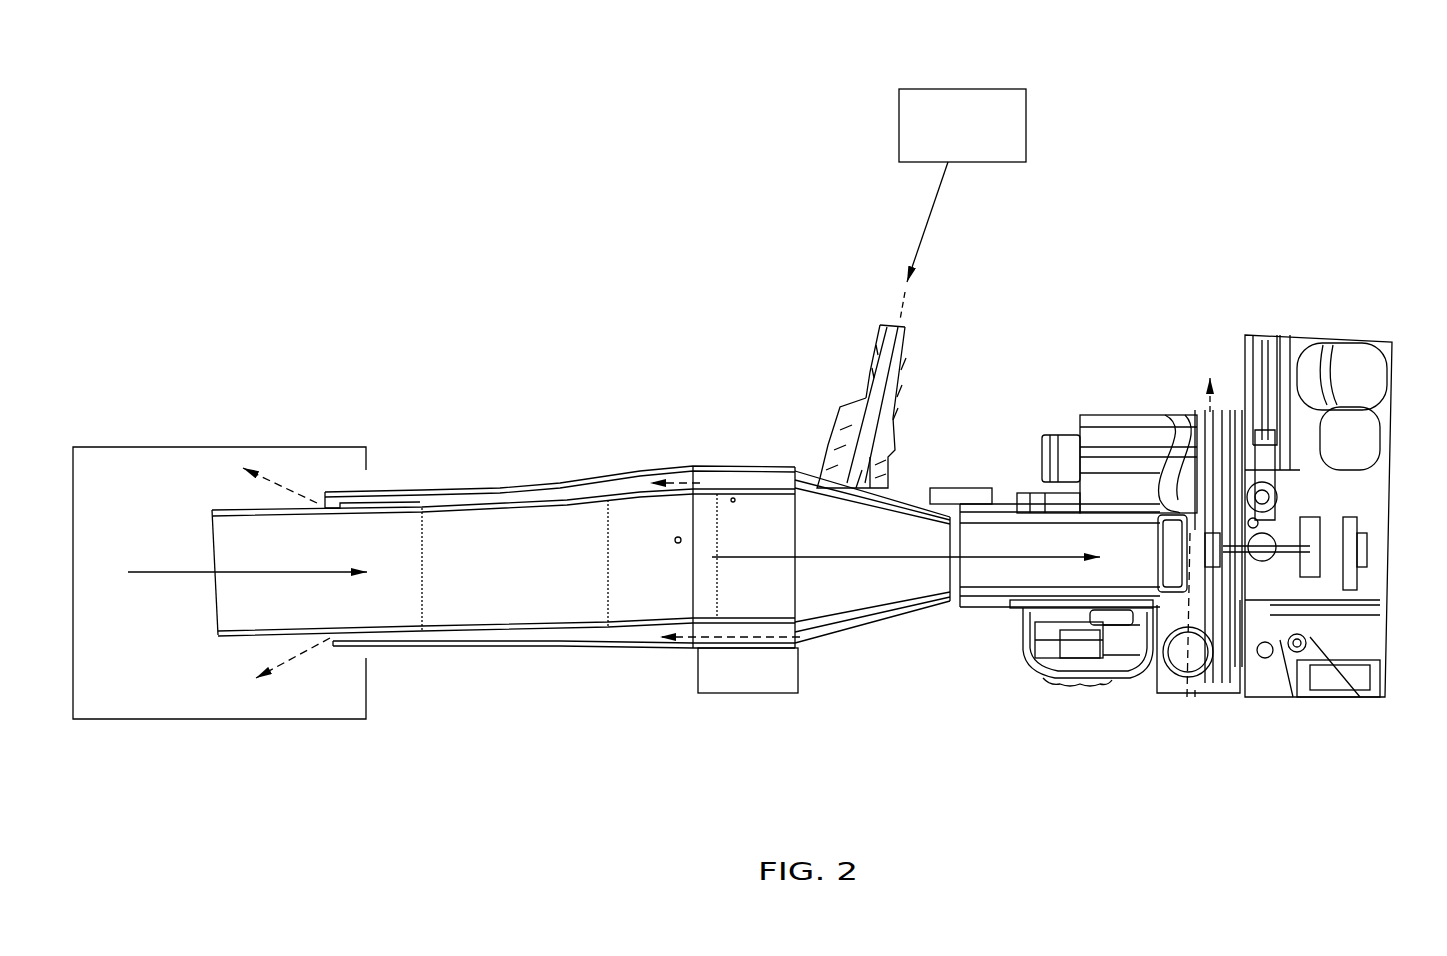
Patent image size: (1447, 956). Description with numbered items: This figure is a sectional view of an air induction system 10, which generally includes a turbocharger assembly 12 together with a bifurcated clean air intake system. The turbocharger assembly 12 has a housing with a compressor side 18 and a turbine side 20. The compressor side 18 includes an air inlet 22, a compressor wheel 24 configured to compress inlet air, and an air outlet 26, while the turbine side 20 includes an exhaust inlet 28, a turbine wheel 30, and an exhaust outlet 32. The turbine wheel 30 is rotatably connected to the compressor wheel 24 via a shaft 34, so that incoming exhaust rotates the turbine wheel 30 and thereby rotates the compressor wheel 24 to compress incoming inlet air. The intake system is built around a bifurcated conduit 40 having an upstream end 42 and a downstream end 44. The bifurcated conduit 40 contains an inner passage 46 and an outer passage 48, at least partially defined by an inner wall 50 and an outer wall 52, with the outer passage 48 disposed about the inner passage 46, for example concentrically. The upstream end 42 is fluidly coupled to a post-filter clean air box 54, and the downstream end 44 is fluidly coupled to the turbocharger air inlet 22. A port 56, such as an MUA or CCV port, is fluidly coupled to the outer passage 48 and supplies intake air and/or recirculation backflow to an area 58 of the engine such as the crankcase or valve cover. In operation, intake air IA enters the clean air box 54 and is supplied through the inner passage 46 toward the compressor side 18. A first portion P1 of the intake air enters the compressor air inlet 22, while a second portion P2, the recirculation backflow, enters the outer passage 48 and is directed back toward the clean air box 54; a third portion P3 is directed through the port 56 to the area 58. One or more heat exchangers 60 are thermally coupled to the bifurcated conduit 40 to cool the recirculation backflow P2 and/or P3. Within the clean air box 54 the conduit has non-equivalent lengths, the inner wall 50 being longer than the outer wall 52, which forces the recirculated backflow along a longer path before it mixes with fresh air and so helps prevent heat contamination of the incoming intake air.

The air induction system 10 is at (1227, 106).
The turbocharger assembly 12 is at (1217, 765).
The compressor side 18 is at (1135, 693).
The turbine side 20 is at (1338, 328).
The air inlet 22 is at (1170, 510).
The compressor wheel 24 is at (1253, 430).
The air outlet 26 is at (1188, 412).
The exhaust inlet 28 is at (1347, 378).
The turbine wheel 30 is at (1330, 637).
The exhaust outlet 32 is at (1370, 560).
The shaft 34 is at (1283, 660).
The bifurcated conduit 40 is at (631, 435).
The upstream end 42 is at (380, 470).
The downstream end 44 is at (1003, 632).
The inner passage 46 is at (547, 595).
The outer passage 48 is at (592, 485).
The inner wall 50 is at (787, 483).
The outer wall 52 is at (573, 478).
The post-filter clean air box 54 is at (138, 446).
The port 56 is at (852, 407).
The area of the engine 58 is at (900, 118).
The heat exchanger 60 is at (965, 486).
The intake air IA is at (157, 575).
The first portion of the intake air P1 is at (1187, 697).
The second portion of the intake air P2 is at (277, 480).
The third portion of the intake air P3 is at (902, 315).